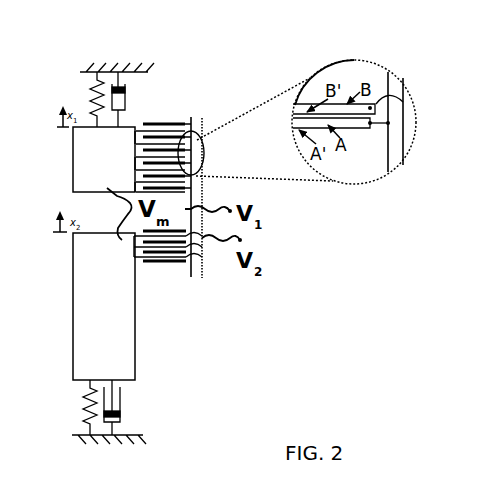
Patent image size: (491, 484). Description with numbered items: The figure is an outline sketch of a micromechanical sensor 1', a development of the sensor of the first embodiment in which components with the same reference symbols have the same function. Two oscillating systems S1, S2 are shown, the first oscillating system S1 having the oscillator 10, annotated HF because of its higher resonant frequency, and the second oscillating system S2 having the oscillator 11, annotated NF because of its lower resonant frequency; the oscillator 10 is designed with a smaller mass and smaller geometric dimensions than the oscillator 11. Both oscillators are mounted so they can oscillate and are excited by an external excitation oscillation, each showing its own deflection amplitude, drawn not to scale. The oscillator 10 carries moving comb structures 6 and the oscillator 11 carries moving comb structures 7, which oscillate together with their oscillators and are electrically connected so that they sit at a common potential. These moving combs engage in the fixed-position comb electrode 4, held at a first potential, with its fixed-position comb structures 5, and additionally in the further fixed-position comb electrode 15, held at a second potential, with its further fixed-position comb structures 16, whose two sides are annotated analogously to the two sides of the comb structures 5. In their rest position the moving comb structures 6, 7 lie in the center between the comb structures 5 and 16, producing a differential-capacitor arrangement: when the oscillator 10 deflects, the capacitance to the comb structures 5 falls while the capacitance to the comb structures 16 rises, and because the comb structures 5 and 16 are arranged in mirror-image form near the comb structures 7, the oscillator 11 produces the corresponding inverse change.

The micromechanical sensor 1' is at (251, 39).
The fixed-position comb electrode 4 is at (203, 127).
The fixed-position comb structures 5 is at (203, 176).
The moving comb structures 6 is at (137, 124).
The moving comb structures 7 is at (139, 260).
The oscillator 10 is at (73, 155).
The oscillator 11 is at (73, 303).
The further fixed-position comb electrode 15 is at (192, 125).
The further fixed-position comb structures 16 is at (150, 124).
The oscillating system S1 is at (53, 87).
The oscillating system S2 is at (65, 395).